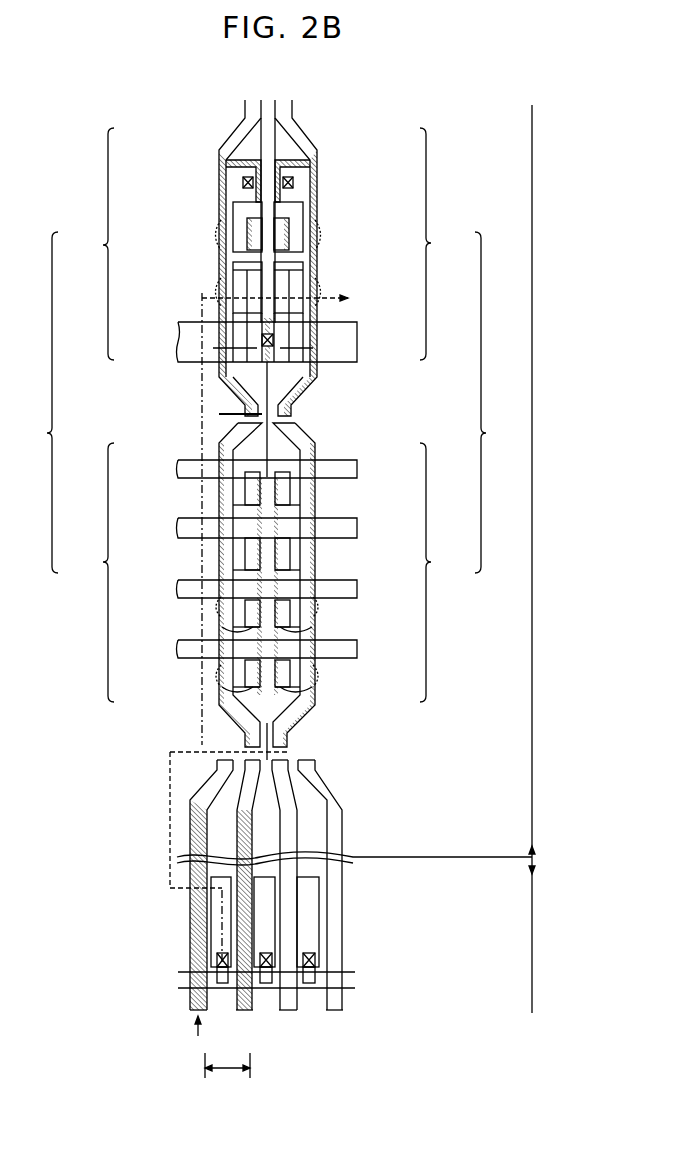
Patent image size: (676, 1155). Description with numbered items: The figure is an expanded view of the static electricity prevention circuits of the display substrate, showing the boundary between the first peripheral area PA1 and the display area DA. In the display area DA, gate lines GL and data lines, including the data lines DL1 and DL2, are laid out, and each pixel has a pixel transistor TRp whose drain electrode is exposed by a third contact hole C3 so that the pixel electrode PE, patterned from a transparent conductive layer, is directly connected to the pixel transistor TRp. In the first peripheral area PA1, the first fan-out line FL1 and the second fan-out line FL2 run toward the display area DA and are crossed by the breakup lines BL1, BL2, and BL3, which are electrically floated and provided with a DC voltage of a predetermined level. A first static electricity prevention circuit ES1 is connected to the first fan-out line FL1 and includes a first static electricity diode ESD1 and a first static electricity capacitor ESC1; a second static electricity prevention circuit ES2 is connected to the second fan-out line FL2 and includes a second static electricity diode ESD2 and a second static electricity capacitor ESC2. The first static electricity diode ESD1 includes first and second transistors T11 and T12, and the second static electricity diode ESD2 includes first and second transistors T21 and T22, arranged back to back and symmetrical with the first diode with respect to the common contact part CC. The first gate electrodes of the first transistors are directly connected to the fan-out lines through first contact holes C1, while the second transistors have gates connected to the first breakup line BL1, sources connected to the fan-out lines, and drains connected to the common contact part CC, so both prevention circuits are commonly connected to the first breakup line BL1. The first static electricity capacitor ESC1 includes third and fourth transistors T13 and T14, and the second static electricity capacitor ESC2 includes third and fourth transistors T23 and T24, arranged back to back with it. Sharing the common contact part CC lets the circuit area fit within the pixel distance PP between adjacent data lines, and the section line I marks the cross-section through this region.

The first fan-out line FL1 is at (220, 153).
The second fan-out line FL2 is at (317, 153).
The first contact hole C1 is at (289, 178).
The common contact part CC is at (275, 368).
The first transistor T11 is at (218, 226).
The first transistor T21 is at (318, 226).
The second transistor T12 is at (218, 284).
The second transistor T22 is at (318, 280).
The section line I-I' I is at (269, 664).
The first breakup line BL1 is at (345, 345).
The pixel distance PP is at (220, 415).
The first static electricity diode ESD1 is at (88, 244).
The second static electricity diode ESD2 is at (446, 244).
The first static electricity prevention circuit ES1 is at (36, 402).
The second static electricity prevention circuit ES2 is at (497, 402).
The first static electricity capacitor ESC1 is at (208, 585).
The second static electricity capacitor ESC2 is at (372, 585).
The second breakup line BL2 is at (348, 585).
The third breakup line BL3 is at (348, 647).
The third transistor T13 is at (218, 604).
The third transistor T23 is at (316, 605).
The fourth transistor T14 is at (218, 670).
The fourth transistor T24 is at (316, 668).
The first data line DL1 is at (218, 908).
The second data line DL2 is at (243, 1011).
The pixel electrode PE is at (210, 933).
The third contact hole C3 is at (310, 940).
The pixel transistor TRp is at (218, 958).
The gate line GL is at (352, 985).
The first peripheral area PA1 is at (550, 559).
The display area DA is at (372, 900).